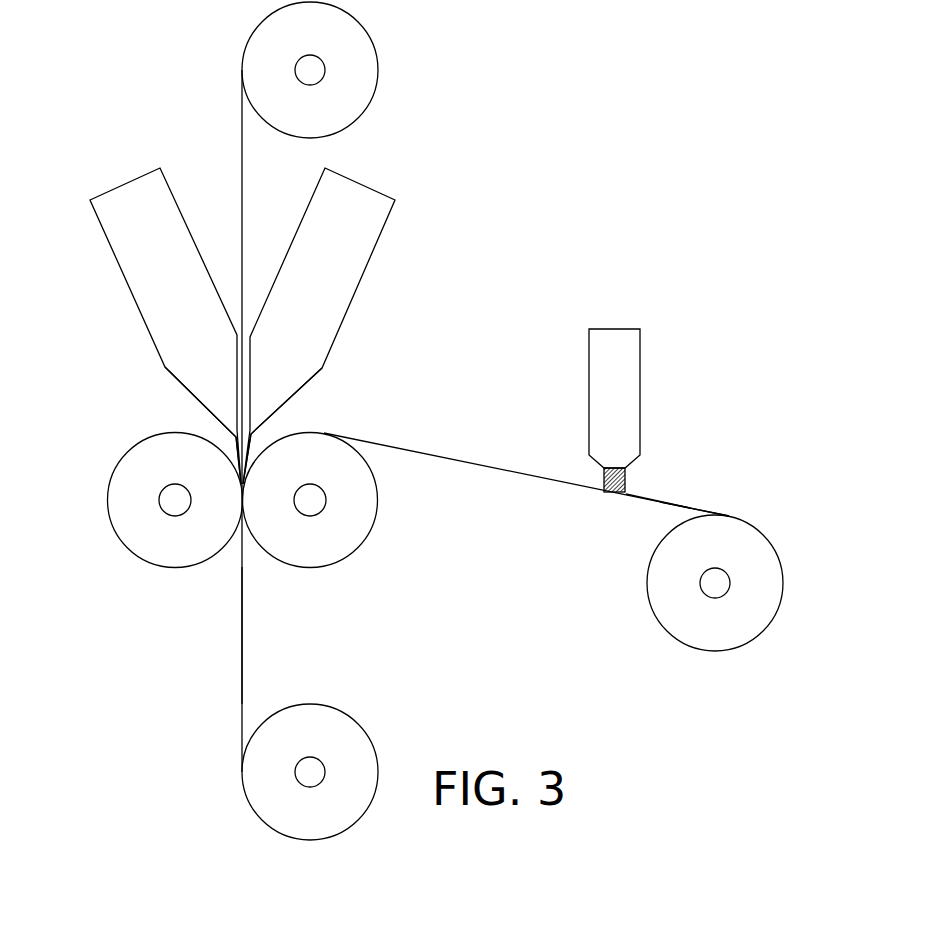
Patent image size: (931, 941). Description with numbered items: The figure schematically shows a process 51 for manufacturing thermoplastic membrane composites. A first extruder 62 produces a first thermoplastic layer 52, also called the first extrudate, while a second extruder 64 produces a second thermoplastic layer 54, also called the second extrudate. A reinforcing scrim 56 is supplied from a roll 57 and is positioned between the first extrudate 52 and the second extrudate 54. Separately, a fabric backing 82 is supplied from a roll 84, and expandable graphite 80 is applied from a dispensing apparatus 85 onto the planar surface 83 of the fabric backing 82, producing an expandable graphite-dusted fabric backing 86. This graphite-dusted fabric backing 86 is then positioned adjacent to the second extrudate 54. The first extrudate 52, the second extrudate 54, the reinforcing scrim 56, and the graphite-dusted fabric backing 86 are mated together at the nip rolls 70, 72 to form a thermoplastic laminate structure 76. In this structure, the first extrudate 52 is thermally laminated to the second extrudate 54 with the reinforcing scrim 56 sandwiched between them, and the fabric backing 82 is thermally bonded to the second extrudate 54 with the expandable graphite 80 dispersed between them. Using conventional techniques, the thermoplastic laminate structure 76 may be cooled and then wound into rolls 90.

The process 51 is at (600, 150).
The first thermoplastic layer 52 is at (240, 452).
The second thermoplastic layer 54 is at (251, 440).
The reinforcing scrim 56 is at (242, 165).
The roll 57 is at (373, 43).
The first extruder 62 is at (102, 232).
The second extruder 64 is at (383, 228).
The nip roll 70 is at (120, 538).
The nip roll 72 is at (353, 550).
The thermoplastic laminate structure 76 is at (242, 633).
The expandable graphite 80 is at (603, 480).
The fabric backing 82 is at (685, 505).
The planar surface 83 is at (643, 492).
The roll 84 is at (763, 535).
The dispensing apparatus 85 is at (638, 337).
The expandable graphite-dusted fabric backing 86 is at (425, 447).
The rolls 90 is at (352, 717).